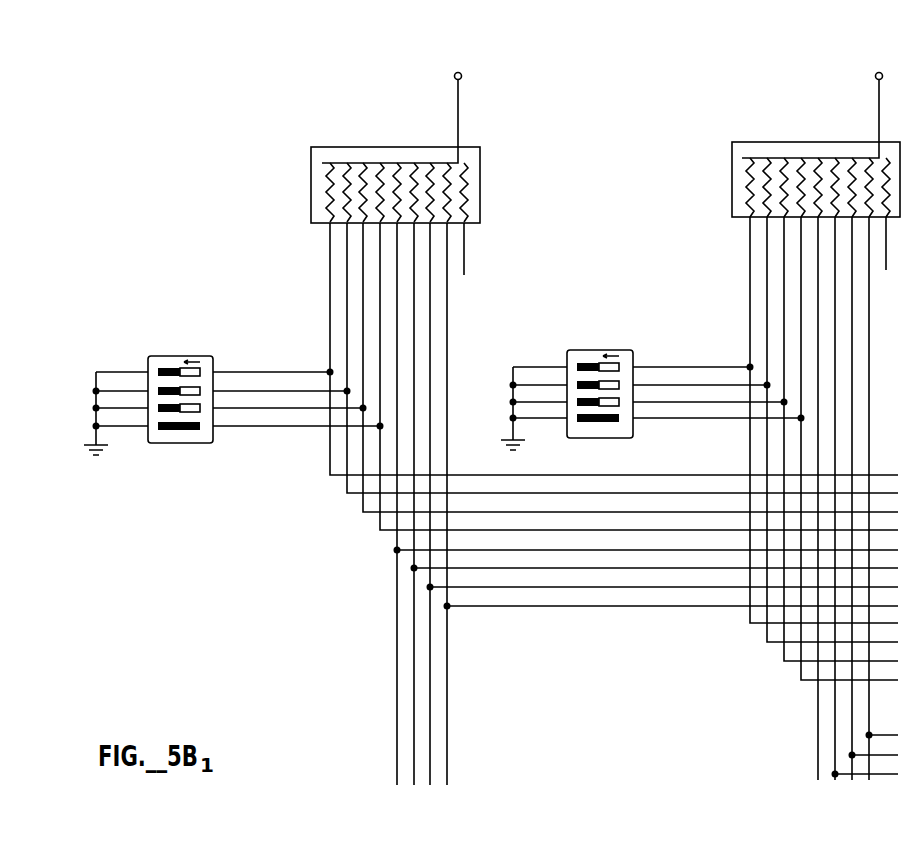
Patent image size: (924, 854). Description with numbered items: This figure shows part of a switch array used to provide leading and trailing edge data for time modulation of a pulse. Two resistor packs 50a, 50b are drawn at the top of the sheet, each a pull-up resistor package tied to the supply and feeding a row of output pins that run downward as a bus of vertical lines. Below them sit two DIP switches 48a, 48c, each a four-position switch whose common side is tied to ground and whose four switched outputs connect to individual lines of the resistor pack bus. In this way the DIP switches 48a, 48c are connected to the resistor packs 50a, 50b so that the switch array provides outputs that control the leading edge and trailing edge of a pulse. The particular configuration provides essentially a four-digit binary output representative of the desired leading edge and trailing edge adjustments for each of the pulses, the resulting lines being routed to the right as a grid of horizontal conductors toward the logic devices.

The resistor pack 50a is at (412, 147).
The resistor pack 50b is at (838, 142).
The DIP switch 48a is at (146, 356).
The DIP switch 48c is at (565, 350).